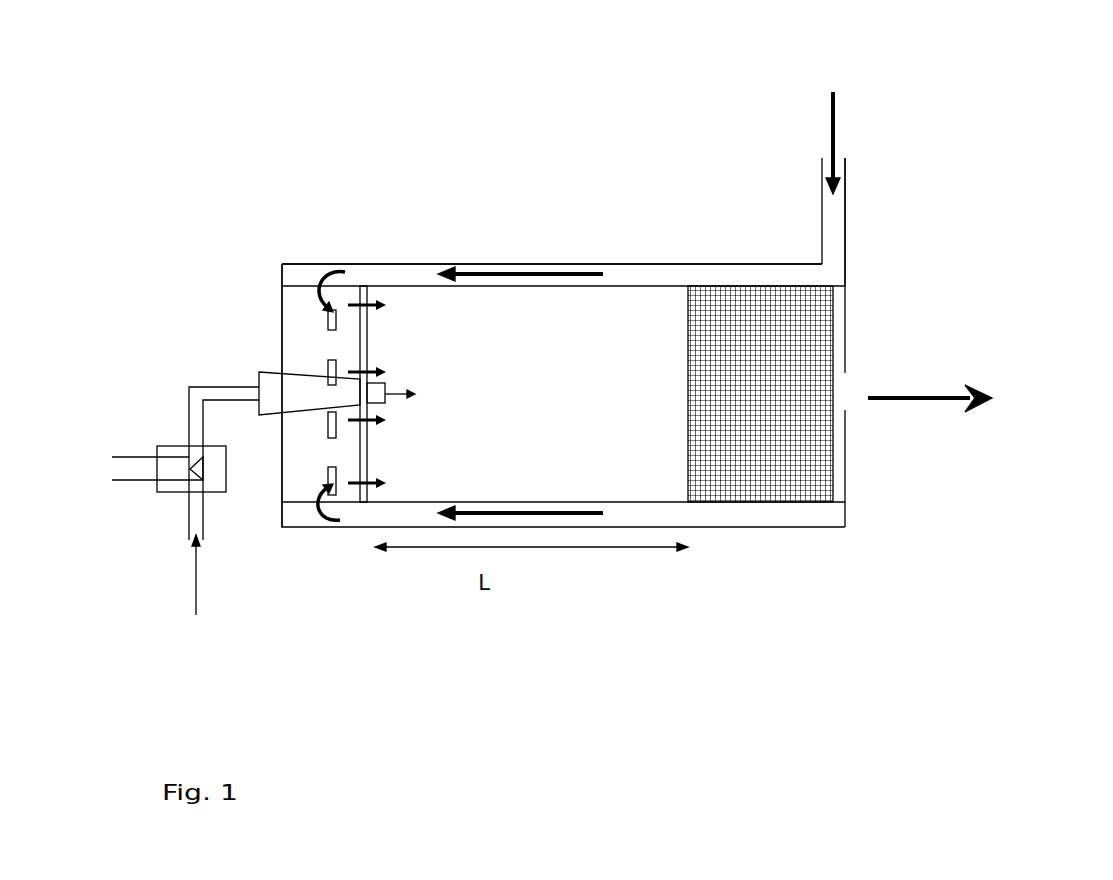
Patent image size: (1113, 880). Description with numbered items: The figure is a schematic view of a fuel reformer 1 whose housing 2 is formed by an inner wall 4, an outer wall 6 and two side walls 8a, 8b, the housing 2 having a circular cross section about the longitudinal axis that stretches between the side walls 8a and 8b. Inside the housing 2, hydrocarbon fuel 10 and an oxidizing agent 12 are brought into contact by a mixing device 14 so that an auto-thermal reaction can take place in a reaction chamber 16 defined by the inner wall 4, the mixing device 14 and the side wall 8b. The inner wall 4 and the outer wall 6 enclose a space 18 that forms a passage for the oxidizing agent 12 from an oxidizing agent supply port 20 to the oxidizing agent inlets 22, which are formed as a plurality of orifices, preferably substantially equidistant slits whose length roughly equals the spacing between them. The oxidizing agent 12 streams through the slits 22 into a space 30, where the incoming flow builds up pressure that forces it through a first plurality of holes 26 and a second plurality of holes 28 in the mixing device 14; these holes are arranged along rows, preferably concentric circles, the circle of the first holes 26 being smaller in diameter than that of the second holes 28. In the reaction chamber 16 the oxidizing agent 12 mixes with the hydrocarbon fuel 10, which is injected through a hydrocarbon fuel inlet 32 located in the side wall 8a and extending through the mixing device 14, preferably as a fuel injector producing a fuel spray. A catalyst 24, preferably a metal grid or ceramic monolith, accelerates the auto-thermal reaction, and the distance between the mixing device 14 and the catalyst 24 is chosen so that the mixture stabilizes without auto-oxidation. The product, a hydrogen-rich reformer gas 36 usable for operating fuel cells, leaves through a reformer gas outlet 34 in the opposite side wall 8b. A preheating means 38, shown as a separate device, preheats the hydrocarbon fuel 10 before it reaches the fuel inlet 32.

The fuel reformer 1 is at (264, 53).
The housing 2 is at (845, 527).
The inner wall 4 is at (495, 287).
The outer wall 6 is at (597, 263).
The side wall 8a is at (280, 307).
The side wall 8b is at (845, 297).
The hydrocarbon fuel 10 is at (221, 514).
The oxidizing agent 12 is at (828, 126).
The mixing device 14 is at (368, 291).
The reaction chamber 16 is at (512, 389).
The space 18 is at (675, 272).
The oxidizing agent supply port 20 is at (832, 207).
The oxidizing agent inlets 22 is at (331, 322).
The catalyst 24 is at (778, 363).
The first plurality of holes 26 is at (368, 383).
The second plurality of holes 28 is at (366, 297).
The space 30 is at (298, 482).
The hydrocarbon fuel inlet 32 is at (272, 388).
The reformer gas outlet 34 is at (845, 397).
The reformer gas 36 is at (950, 398).
The preheating means 38 is at (182, 468).